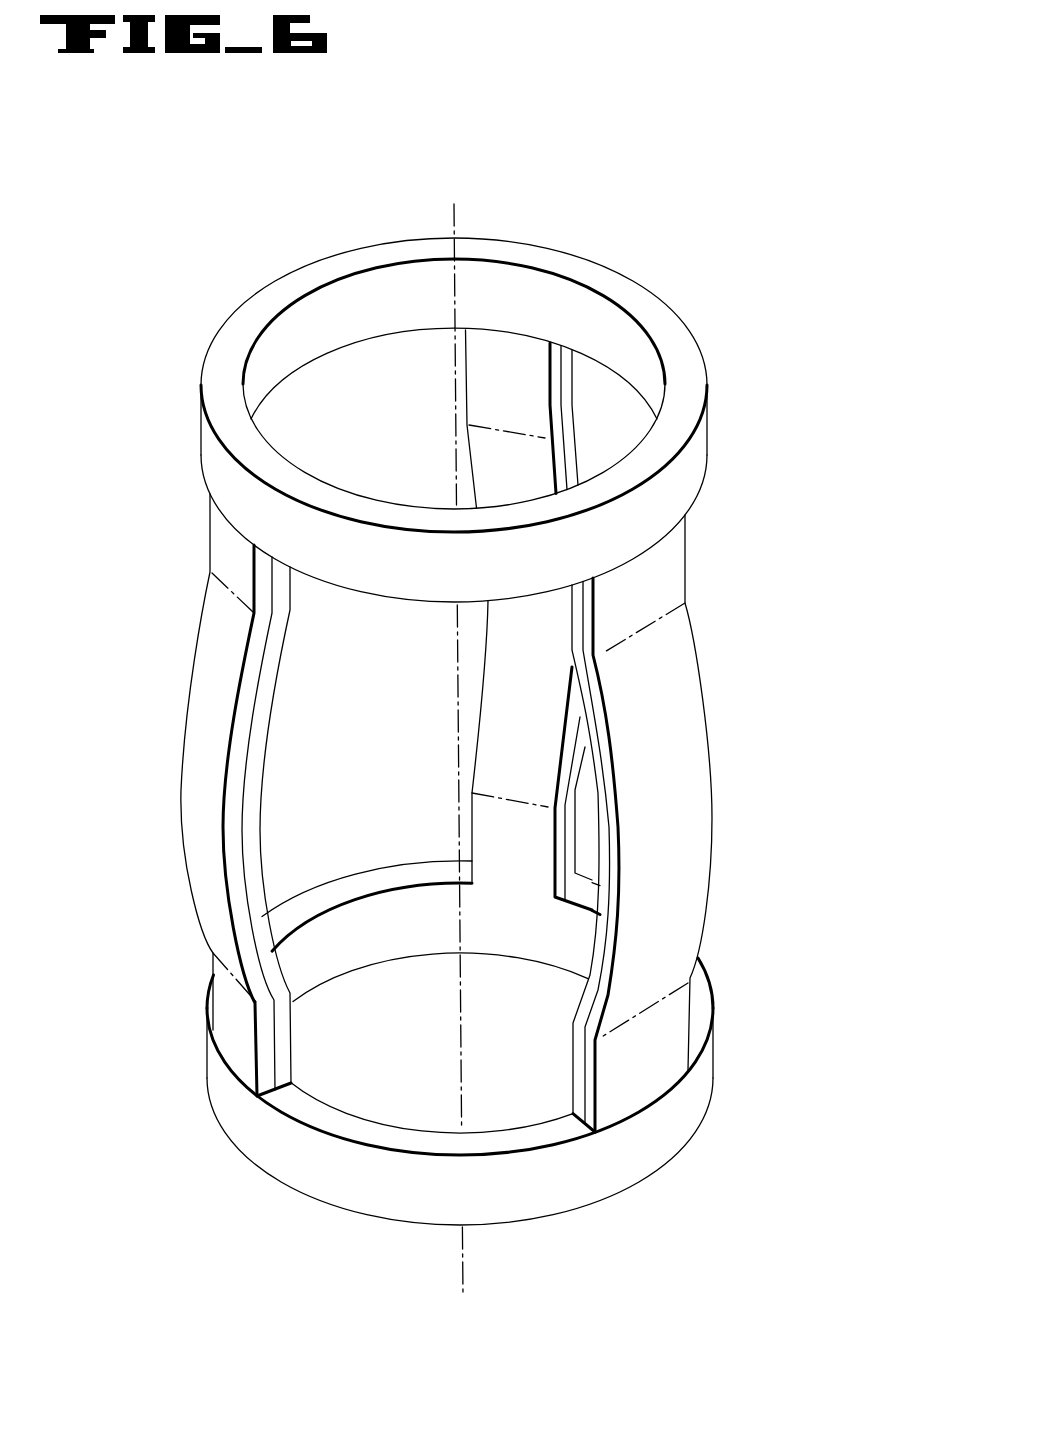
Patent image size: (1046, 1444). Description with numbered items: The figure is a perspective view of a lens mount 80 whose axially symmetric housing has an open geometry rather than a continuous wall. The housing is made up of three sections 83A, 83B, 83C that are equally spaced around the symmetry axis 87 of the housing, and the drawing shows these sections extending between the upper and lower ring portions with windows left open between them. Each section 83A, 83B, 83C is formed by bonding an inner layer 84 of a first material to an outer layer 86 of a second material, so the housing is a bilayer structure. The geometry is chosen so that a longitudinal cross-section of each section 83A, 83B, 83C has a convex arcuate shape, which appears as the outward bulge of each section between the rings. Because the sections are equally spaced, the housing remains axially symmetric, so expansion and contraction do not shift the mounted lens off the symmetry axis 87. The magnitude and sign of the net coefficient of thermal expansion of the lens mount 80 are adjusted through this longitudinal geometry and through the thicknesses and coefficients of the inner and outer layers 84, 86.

The lens mount 80 is at (679, 269).
The symmetry axis 87 is at (455, 278).
The section 83A is at (730, 693).
The section 83B is at (163, 695).
The section 83C is at (462, 481).
The inner layer 84 is at (555, 406).
The outer layer 86 is at (563, 363).